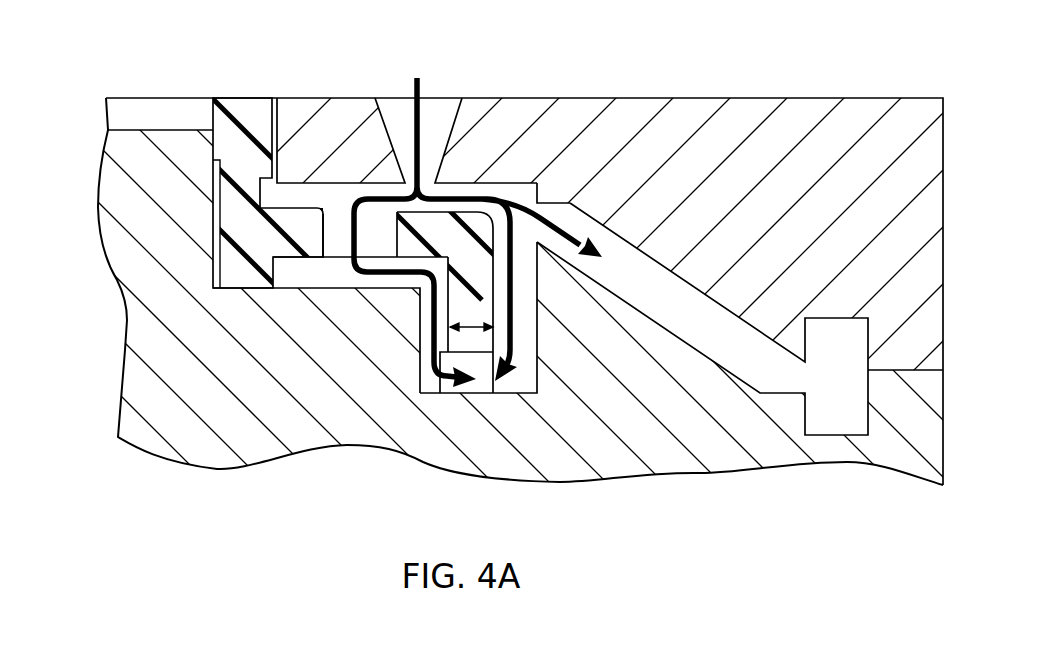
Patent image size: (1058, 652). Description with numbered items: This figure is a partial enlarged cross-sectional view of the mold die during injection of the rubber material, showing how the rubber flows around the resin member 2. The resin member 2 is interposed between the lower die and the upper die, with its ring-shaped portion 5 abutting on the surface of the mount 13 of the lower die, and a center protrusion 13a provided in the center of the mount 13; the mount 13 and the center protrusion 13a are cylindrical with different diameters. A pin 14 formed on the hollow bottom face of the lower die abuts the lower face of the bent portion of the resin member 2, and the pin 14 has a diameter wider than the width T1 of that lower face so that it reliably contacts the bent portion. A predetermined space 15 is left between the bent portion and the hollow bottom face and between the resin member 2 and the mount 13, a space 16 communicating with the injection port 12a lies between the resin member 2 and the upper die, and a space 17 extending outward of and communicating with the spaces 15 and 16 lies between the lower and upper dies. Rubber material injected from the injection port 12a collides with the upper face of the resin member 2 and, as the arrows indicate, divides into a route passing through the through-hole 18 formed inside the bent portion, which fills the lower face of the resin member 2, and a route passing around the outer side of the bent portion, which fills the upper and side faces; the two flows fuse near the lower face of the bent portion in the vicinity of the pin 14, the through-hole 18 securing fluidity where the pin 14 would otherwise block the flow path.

The resin member 2 is at (512, 193).
The ring-shaped portion 5 is at (233, 108).
The injection port 12a is at (440, 114).
The mount 13 is at (137, 317).
The center protrusion 13a is at (137, 197).
The pin 14 is at (490, 390).
The space 15 is at (317, 283).
The space 16 is at (518, 187).
The space 17 is at (625, 255).
The through-hole 18 is at (326, 236).
The width of the lower face of the bent portion T1 is at (468, 325).